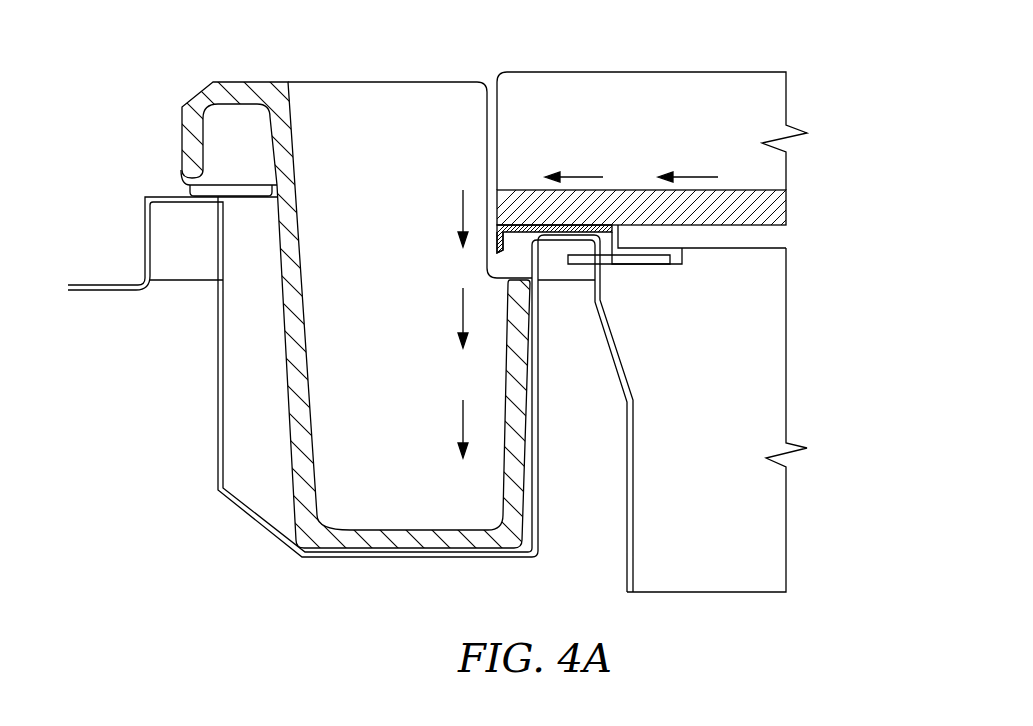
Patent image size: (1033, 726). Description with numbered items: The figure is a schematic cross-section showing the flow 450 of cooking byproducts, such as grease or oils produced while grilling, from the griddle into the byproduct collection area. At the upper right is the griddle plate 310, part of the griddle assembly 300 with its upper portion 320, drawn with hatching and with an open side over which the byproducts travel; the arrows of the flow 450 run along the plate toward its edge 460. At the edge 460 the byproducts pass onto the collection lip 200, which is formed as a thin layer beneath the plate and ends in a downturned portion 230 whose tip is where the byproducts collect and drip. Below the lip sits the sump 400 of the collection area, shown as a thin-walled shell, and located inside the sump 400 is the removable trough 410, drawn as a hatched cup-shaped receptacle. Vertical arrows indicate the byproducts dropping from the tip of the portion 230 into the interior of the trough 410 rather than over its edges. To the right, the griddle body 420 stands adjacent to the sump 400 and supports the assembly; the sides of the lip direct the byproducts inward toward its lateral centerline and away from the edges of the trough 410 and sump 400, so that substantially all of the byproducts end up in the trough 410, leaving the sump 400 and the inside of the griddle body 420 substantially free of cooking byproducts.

The collection lip 200 is at (490, 250).
The collection lip portion 230 is at (490, 263).
The griddle assembly 300 is at (676, 118).
The griddle plate 310 is at (788, 199).
The griddle assembly portion 320 is at (673, 100).
The sump 400 is at (516, 342).
The trough 410 is at (380, 500).
The griddle body 420 is at (688, 409).
The flow 450 is at (584, 177).
The edge 460 is at (497, 192).